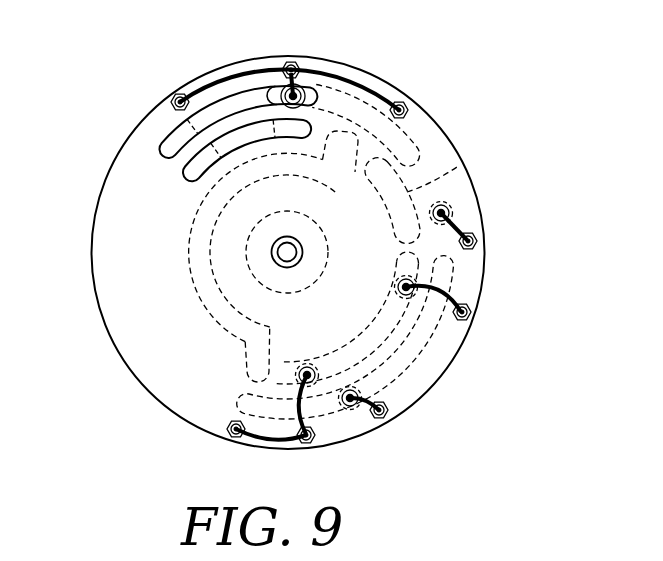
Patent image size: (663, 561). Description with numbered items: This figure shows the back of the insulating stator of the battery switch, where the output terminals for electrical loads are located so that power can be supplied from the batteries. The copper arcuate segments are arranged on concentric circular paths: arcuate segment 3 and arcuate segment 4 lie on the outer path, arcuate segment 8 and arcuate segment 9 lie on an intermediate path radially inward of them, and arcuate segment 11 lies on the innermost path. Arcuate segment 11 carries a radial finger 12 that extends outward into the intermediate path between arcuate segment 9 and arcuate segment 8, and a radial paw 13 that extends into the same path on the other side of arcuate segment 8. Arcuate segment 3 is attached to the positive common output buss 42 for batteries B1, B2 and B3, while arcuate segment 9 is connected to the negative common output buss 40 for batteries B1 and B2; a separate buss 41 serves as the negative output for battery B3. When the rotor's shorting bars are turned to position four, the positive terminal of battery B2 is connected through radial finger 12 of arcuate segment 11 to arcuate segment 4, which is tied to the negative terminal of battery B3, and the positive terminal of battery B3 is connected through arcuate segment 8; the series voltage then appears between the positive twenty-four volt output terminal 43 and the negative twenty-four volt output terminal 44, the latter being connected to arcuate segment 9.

The arcuate segment 3 is at (358, 93).
The arcuate segment 4 is at (428, 348).
The arcuate segment 8 is at (456, 175).
The arcuate segment 9 is at (369, 338).
The arcuate segment 11 is at (191, 251).
The radial finger 12 is at (246, 354).
The radial paw 13 is at (345, 161).
The negative common output buss 40 is at (281, 444).
The buss 41 is at (387, 405).
The positive common output buss 42 is at (318, 74).
The positive 24 volt output terminal 43 is at (468, 214).
The negative 24 volt output terminal 44 is at (470, 300).